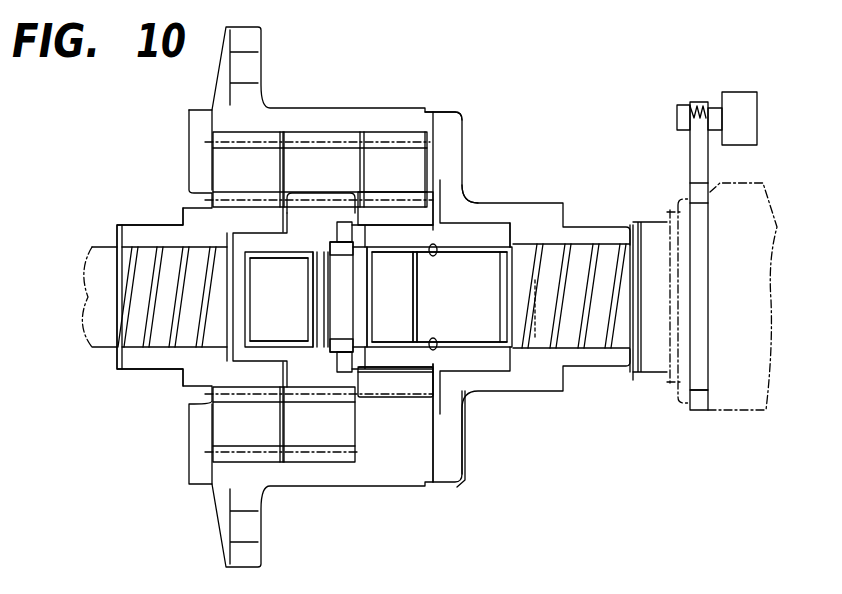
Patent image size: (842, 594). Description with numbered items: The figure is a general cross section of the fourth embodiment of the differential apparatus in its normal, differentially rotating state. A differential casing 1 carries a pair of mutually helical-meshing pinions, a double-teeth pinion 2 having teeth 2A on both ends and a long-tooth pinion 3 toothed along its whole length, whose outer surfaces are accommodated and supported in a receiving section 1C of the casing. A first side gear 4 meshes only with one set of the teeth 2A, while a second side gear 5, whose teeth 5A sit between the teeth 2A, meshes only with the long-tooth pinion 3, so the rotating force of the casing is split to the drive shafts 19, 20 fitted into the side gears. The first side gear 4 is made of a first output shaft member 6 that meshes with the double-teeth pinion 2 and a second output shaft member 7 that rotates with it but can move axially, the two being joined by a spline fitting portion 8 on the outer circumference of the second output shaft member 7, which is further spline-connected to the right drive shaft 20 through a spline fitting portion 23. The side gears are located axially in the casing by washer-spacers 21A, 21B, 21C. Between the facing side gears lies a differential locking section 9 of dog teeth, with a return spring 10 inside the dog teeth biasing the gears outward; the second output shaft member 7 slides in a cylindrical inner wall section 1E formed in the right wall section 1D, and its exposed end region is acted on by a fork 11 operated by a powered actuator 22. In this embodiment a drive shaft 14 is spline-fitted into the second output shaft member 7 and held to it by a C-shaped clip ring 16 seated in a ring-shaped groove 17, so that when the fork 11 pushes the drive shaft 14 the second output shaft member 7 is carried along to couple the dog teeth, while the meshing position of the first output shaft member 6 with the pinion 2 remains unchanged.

The differential casing 1 is at (400, 94).
The receiving section 1C is at (298, 133).
The right wall section 1D is at (475, 208).
The cylindrical inner wall section 1E is at (513, 250).
The double-teeth pinion 2 is at (327, 147).
The teeth 2A is at (400, 131).
The long-tooth pinion 3 is at (328, 437).
The first side gear 4 is at (448, 215).
The second side gear 5 is at (291, 252).
The teeth 5A is at (289, 270).
The first output shaft member 6 is at (443, 252).
The second output shaft member 7 is at (372, 242).
The spline fitting portion 8 is at (391, 234).
The differential locking section 9 is at (332, 365).
The return spring 10 is at (355, 350).
The fork 11 is at (700, 167).
The drive shaft 14 is at (468, 323).
The C-shaped clip ring 16 is at (448, 360).
The ring-shaped groove 17 is at (436, 350).
The drive shaft 19 is at (92, 247).
The drive shaft 20 is at (658, 222).
The washer-spacer 21A is at (289, 215).
The washer-spacer 21B is at (360, 385).
The washer-spacer 21C is at (436, 395).
The powered actuator 22 is at (737, 100).
The spline fitting portion 23 is at (468, 393).